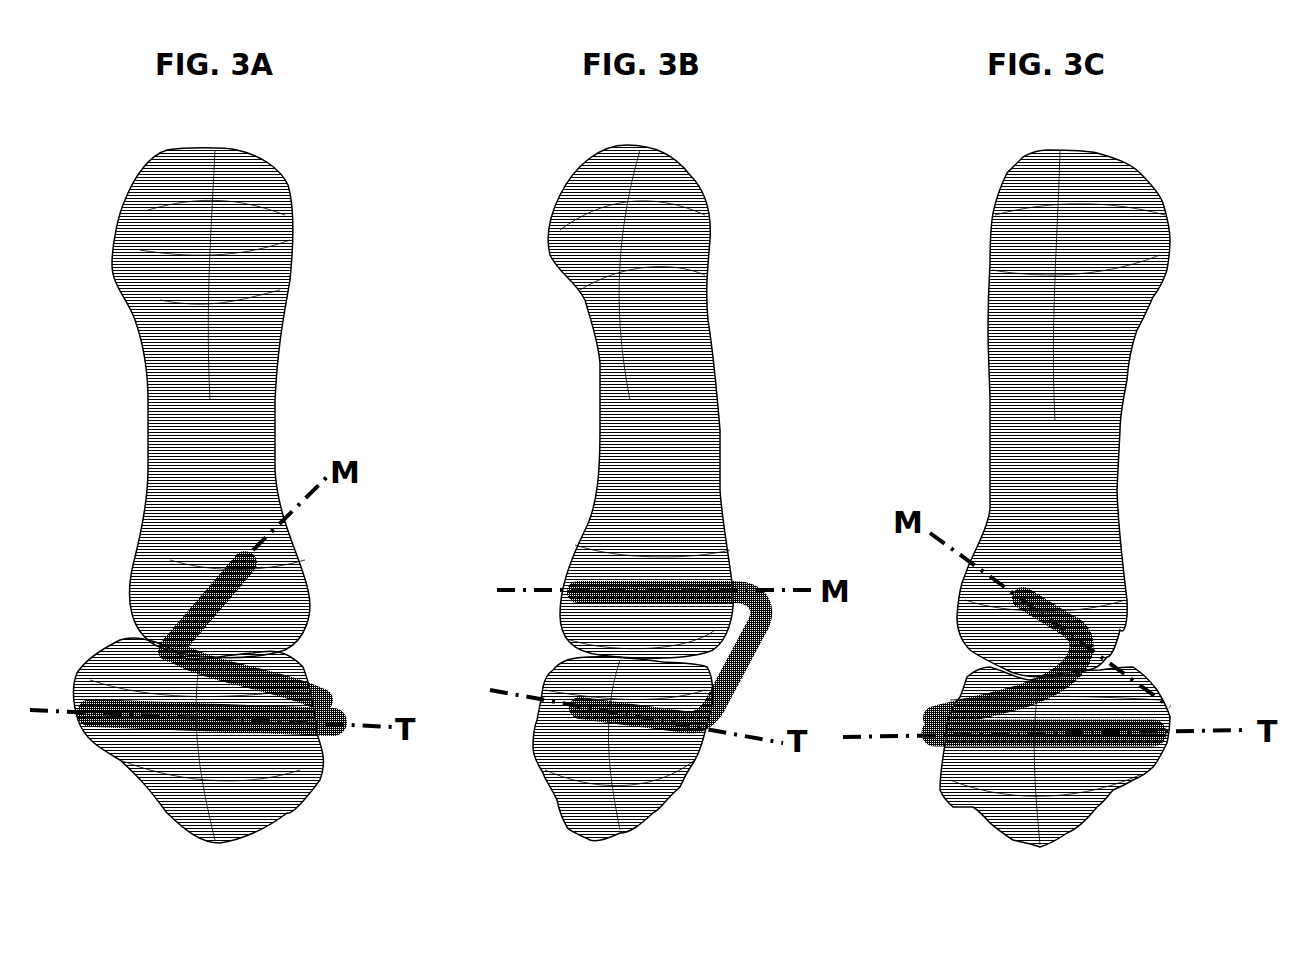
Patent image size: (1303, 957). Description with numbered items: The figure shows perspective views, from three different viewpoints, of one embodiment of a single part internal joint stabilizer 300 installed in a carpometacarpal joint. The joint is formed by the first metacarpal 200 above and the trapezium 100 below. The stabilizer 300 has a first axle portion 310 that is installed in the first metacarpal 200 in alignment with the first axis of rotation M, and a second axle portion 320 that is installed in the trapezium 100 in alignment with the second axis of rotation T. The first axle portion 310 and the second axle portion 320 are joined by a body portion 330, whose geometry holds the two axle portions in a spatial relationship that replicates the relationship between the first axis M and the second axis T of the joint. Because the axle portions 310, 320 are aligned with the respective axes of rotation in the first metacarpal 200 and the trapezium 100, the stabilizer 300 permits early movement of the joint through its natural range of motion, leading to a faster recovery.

In FIG. 3A, the trapezium 100 is at (267, 783).
In FIG. 3B, the trapezium 100 is at (617, 785).
In FIG. 3C, the trapezium 100 is at (1055, 757).
In FIG. 3A, the first metacarpal 200 is at (265, 232).
In FIG. 3B, the first metacarpal 200 is at (690, 233).
In FIG. 3C, the first metacarpal 200 is at (1050, 267).
In FIG. 3A, the single part internal joint stabilizer 300 is at (255, 651).
In FIG. 3B, the single part internal joint stabilizer 300 is at (678, 645).
In FIG. 3C, the single part internal joint stabilizer 300 is at (1031, 694).
In FIG. 3A, the first axle portion 310 is at (217, 580).
In FIG. 3C, the first axle portion 310 is at (1057, 607).
In FIG. 3A, the second axle portion 320 is at (160, 727).
In FIG. 3B, the second axle portion 320 is at (699, 764).
In FIG. 3C, the second axle portion 320 is at (1015, 740).
In FIG. 3A, the body portion 330 is at (303, 660).
In FIG. 3B, the body portion 330 is at (740, 667).
In FIG. 3C, the body portion 330 is at (960, 693).